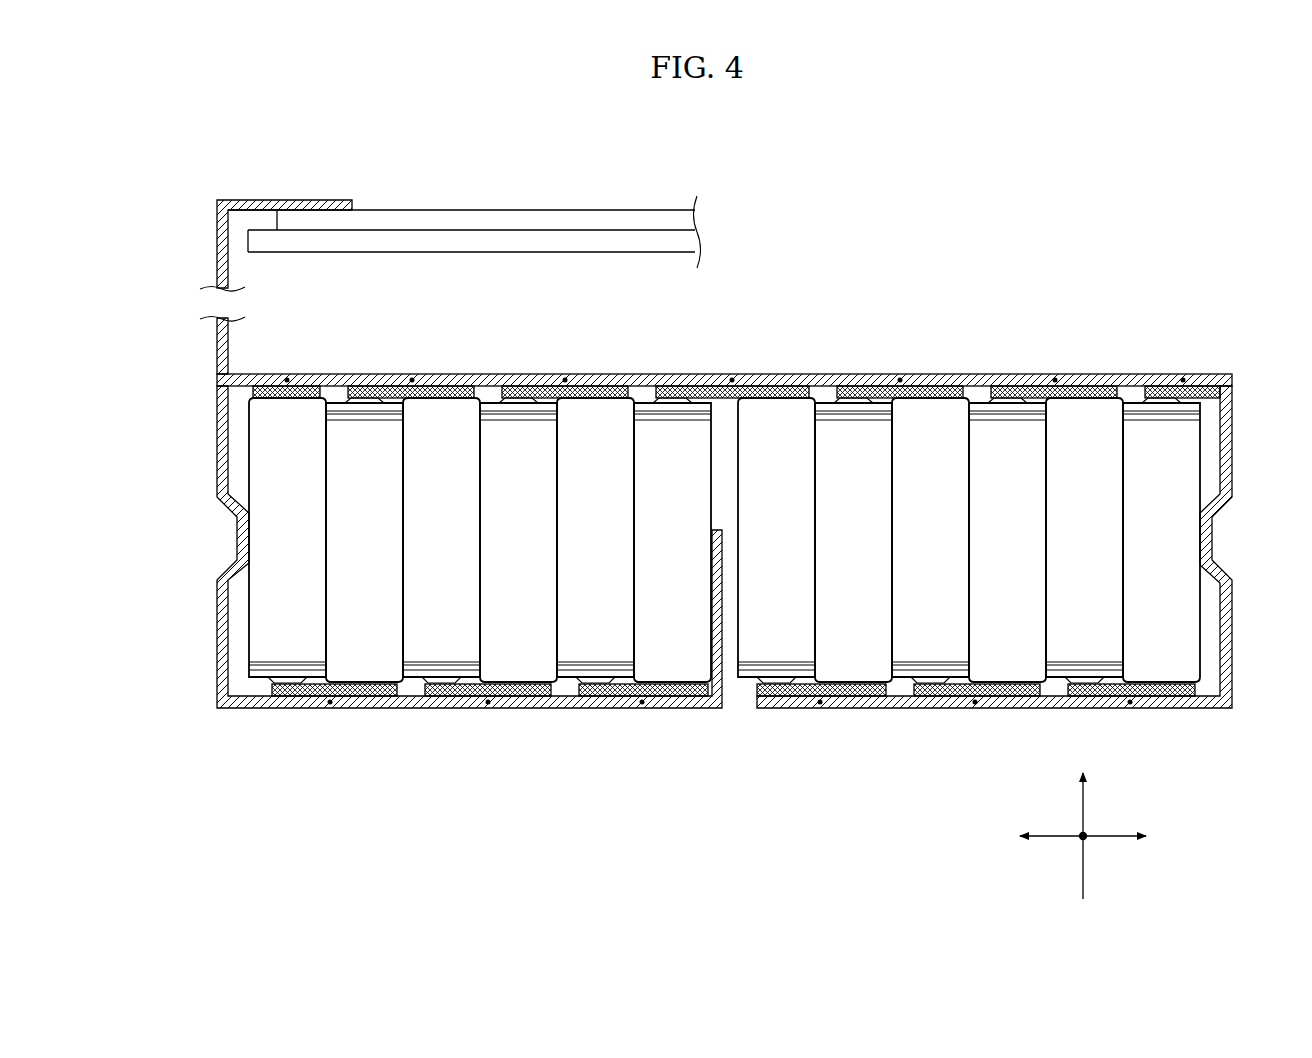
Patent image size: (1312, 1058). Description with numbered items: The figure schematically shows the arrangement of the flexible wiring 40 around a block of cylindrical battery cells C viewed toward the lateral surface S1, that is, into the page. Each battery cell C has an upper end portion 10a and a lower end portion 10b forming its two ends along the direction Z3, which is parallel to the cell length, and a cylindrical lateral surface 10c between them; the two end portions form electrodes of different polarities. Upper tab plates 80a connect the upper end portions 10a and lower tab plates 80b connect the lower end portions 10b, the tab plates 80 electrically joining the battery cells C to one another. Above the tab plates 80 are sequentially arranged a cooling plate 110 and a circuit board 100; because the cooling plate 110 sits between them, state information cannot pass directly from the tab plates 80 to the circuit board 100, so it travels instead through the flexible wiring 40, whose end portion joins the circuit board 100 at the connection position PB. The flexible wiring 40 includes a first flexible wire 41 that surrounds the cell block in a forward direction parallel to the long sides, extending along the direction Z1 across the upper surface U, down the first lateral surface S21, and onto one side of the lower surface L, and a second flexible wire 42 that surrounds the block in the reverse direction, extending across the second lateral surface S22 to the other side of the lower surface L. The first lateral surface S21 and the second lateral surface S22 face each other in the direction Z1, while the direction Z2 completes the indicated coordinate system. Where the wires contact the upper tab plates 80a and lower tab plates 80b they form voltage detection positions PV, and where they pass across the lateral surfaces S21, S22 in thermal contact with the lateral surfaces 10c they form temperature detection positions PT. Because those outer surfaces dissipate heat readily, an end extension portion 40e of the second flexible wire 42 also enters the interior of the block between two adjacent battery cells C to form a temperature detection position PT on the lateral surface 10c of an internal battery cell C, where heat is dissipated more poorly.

The flexible wiring 40 is at (260, 274).
The first flexible wire 41 is at (695, 375).
The second flexible wire 42 is at (696, 601).
The end extension portion 40e is at (729, 708).
The connection position PB is at (347, 195).
The circuit board 100 is at (508, 218).
The cooling plate 110 is at (585, 244).
The upper surface U is at (700, 310).
The lower surface L is at (881, 717).
The voltage detection position PV is at (900, 380).
The temperature detection position PT is at (696, 597).
The upper end portion 10a is at (302, 402).
The lower end portion 10b is at (287, 680).
The cylindrical lateral surface 10c is at (287, 597).
The battery cell C is at (235, 559).
The tab plate 80 is at (736, 543).
The upper tab plate 80a is at (388, 392).
The lower tab plate 80b is at (375, 693).
The lateral surface S1 is at (518, 540).
The first lateral surface S21 is at (1241, 657).
The second lateral surface S22 is at (202, 578).
The direction Z1 is at (1130, 835).
The direction Z2 is at (1053, 866).
The direction Z3 is at (1082, 790).